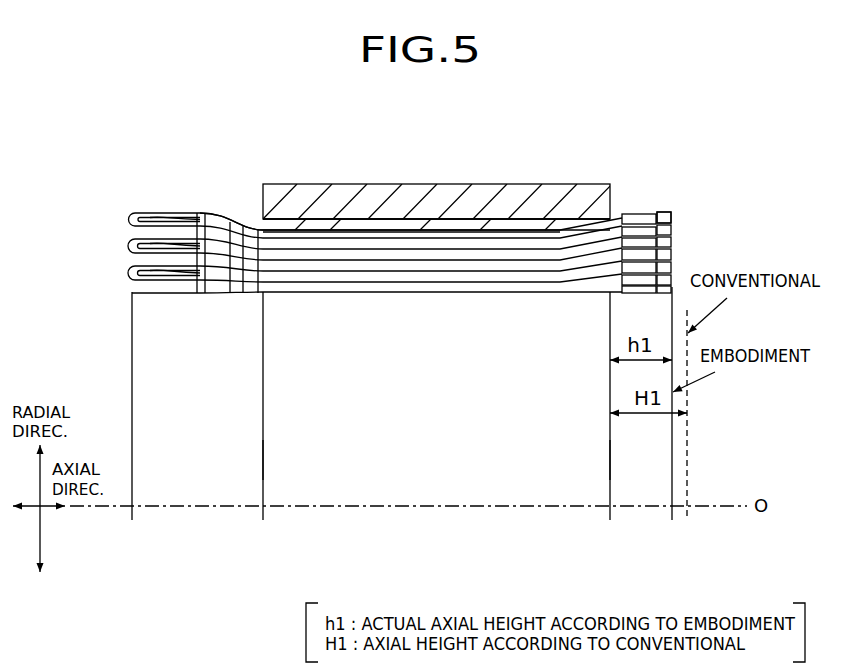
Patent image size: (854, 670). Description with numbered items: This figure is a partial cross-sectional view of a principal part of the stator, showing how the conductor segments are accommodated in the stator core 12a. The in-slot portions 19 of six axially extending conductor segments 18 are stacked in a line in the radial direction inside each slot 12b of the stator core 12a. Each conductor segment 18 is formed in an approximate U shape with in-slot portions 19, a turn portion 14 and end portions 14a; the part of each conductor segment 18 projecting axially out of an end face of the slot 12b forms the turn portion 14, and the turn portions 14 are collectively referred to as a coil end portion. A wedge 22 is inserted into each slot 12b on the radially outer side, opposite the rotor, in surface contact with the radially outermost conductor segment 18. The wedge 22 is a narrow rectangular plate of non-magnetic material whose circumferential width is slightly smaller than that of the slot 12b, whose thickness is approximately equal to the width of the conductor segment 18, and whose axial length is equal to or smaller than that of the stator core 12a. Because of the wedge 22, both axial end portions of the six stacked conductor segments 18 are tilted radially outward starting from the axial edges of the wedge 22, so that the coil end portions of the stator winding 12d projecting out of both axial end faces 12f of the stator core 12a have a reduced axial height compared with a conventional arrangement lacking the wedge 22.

The stator core 12a is at (303, 184).
The slot 12b is at (413, 221).
The stator winding 12d is at (233, 218).
The axial end face 12f is at (263, 457).
The turn portion 14 is at (658, 213).
The end portion 14a is at (170, 212).
The conductor segment 18 is at (668, 216).
The in-slot portion 19 is at (357, 232).
The wedge 22 is at (505, 217).